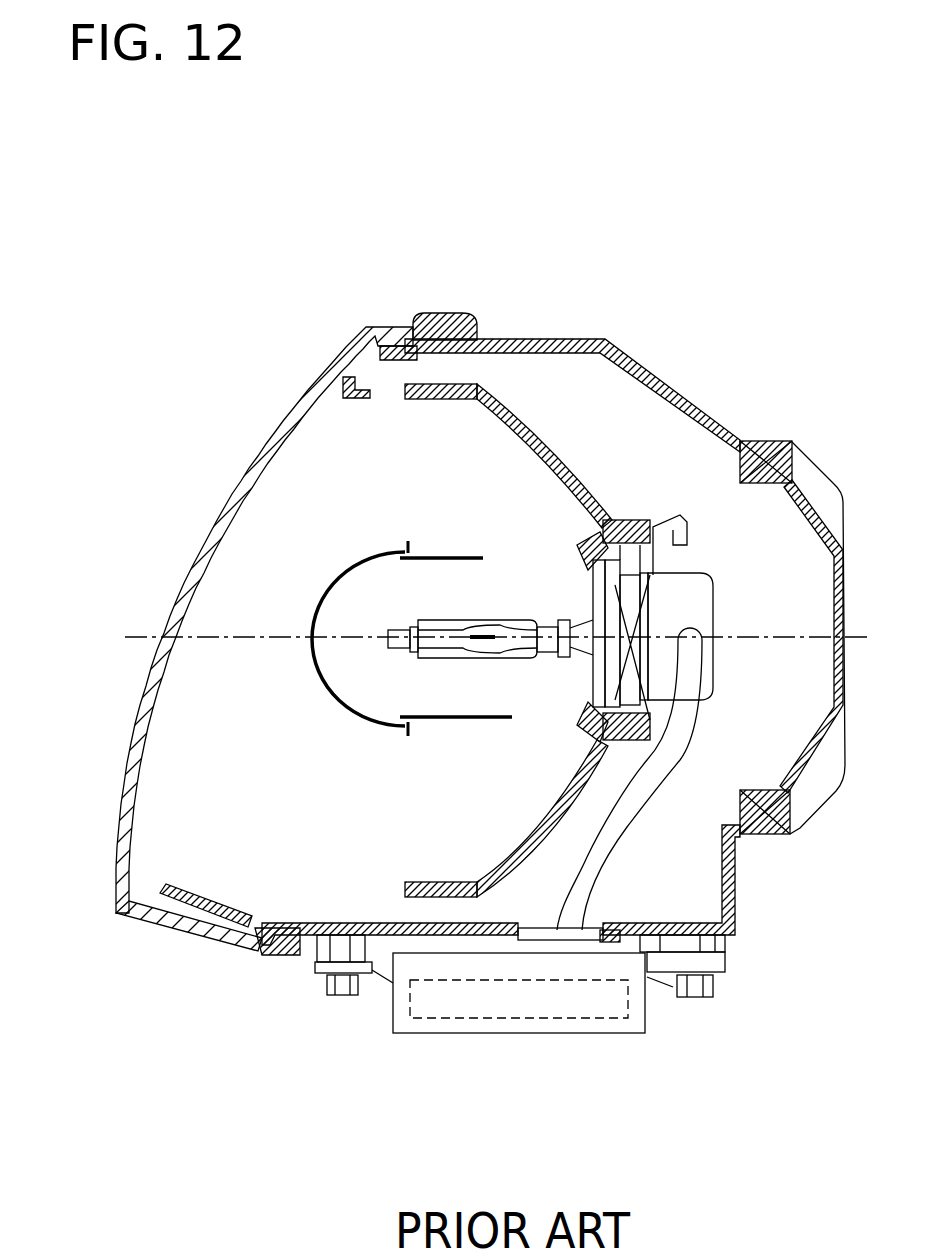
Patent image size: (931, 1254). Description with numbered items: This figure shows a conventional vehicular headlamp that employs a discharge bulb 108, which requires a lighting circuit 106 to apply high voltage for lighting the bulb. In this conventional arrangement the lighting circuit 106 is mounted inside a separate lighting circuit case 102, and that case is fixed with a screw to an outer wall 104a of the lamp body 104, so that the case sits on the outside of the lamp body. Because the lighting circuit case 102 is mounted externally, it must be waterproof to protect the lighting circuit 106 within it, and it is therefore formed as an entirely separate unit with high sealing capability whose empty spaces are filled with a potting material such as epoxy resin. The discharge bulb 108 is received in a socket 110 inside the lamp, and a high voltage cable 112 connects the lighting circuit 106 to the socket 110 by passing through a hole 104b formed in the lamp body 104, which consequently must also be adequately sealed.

The lighting circuit case 102 is at (544, 1040).
The lamp body 104 is at (703, 398).
The outer wall 104a is at (724, 944).
The hole 104b is at (600, 930).
The lighting circuit 106 is at (508, 1019).
The discharge bulb 108 is at (512, 614).
The socket 110 is at (694, 600).
The high voltage cable 112 is at (652, 785).